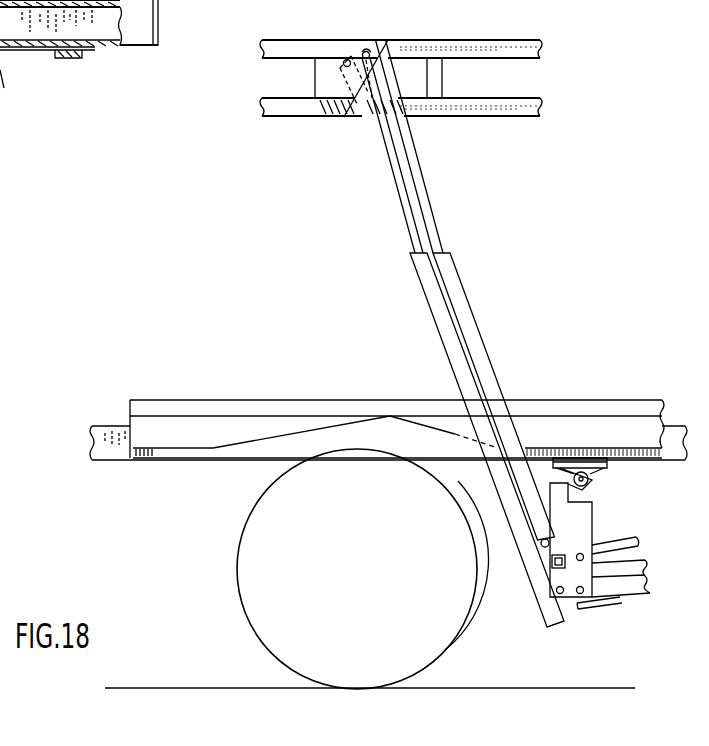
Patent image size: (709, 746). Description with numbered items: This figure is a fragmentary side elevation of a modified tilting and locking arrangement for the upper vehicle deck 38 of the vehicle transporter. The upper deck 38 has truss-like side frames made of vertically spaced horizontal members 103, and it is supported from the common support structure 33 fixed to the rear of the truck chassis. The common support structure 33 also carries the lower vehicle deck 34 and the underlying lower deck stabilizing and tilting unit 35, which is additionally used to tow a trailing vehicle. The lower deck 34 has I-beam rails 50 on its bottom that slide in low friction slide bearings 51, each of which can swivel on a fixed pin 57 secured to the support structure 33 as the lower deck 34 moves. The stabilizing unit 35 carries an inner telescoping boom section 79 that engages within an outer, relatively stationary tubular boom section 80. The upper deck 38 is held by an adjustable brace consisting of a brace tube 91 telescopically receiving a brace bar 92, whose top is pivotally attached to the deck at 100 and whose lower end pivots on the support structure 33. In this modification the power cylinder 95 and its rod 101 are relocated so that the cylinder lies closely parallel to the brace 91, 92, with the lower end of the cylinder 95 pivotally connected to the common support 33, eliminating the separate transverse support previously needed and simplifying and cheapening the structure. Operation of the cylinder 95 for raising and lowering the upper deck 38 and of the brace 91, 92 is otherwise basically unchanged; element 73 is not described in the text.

The common support structure 33 is at (588, 534).
The lower vehicle deck 34 is at (342, 400).
The lower deck stabilizing and tilting unit 35 is at (624, 587).
The upper vehicle deck 38 is at (453, 36).
The I-beam rail 50 is at (130, 452).
The slide bearing 51 is at (563, 453).
The fixed pin 57 is at (589, 485).
The member 73 is at (0, 111).
The inner telescoping boom section 79 is at (128, 46).
The outer tubular boom section 80 is at (549, 574).
The brace tube 91 is at (471, 317).
The adjustable brace bar 92 is at (417, 172).
The power cylinder 95 is at (447, 336).
The pivotal attachment of brace bar 100 is at (367, 50).
The cylinder rod 101 is at (405, 221).
The horizontal member 103 is at (513, 105).